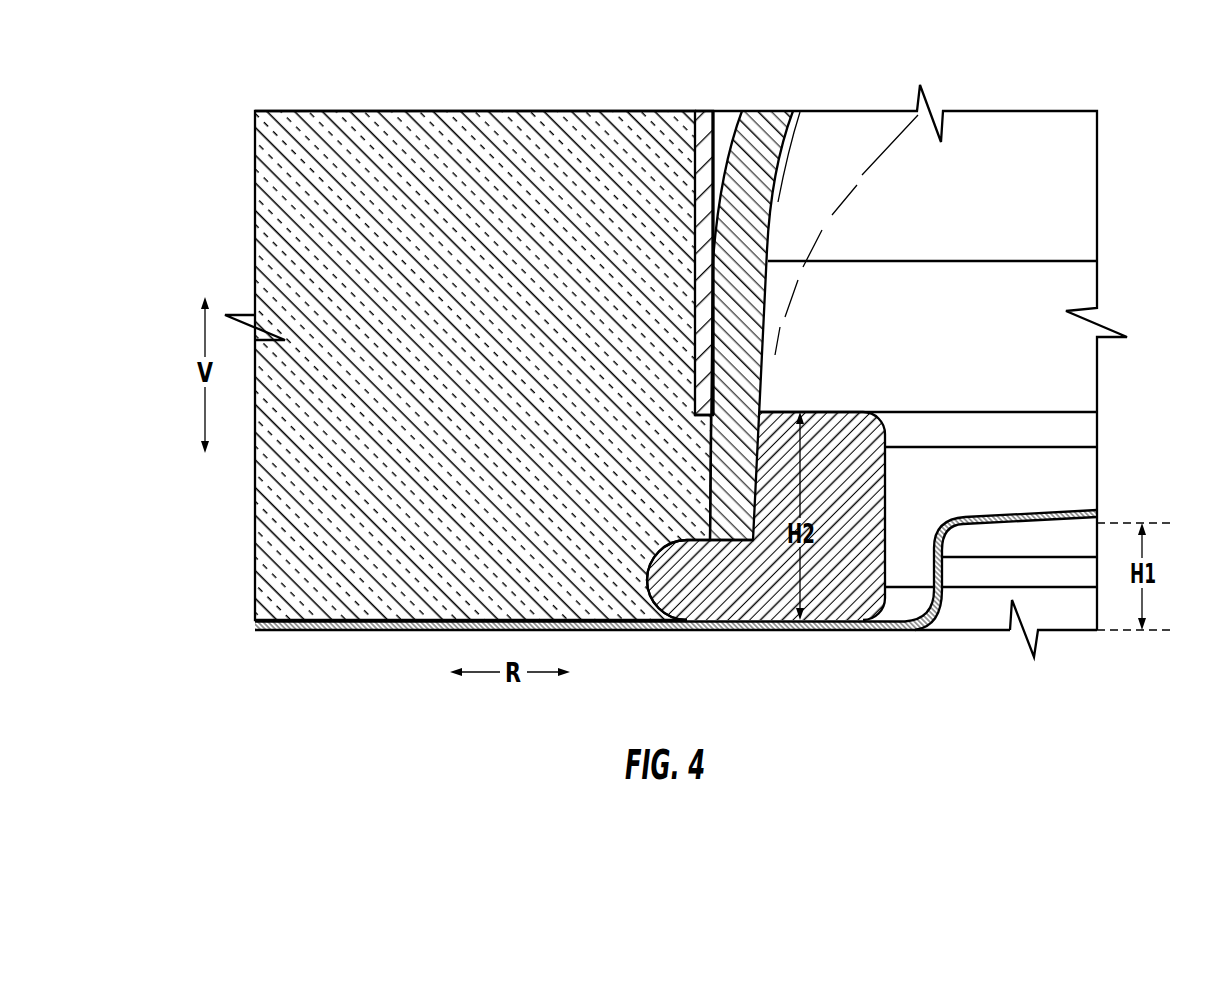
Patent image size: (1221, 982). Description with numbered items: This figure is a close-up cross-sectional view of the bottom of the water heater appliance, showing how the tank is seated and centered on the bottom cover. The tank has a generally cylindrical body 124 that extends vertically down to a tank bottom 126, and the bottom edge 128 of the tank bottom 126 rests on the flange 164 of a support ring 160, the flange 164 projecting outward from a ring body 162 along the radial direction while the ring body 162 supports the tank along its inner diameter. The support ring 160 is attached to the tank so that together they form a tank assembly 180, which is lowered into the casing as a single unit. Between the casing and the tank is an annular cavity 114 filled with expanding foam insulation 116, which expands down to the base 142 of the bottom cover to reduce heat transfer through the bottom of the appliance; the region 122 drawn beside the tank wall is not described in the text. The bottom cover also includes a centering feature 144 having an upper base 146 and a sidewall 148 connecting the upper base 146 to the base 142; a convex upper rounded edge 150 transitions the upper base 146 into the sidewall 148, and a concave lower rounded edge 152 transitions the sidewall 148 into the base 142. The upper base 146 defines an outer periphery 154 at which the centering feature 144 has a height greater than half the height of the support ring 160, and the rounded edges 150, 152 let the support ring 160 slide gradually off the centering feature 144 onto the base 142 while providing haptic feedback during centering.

The annular cavity 114 is at (390, 120).
The insulation 116 is at (488, 130).
The passage 122 is at (725, 112).
The body 124 is at (690, 133).
The tank bottom 126 is at (786, 139).
The bottom edge 128 is at (695, 528).
The base 142 is at (390, 630).
The centering feature 144 is at (1064, 657).
The upper base 146 is at (1082, 511).
The sidewall 148 is at (930, 566).
The upper rounded edge 150 is at (942, 506).
The lower rounded edge 152 is at (910, 603).
The outer periphery 154 is at (957, 482).
The support ring 160 is at (819, 383).
The ring body 162 is at (843, 560).
The flange 164 is at (697, 570).
The tank assembly 180 is at (805, 306).